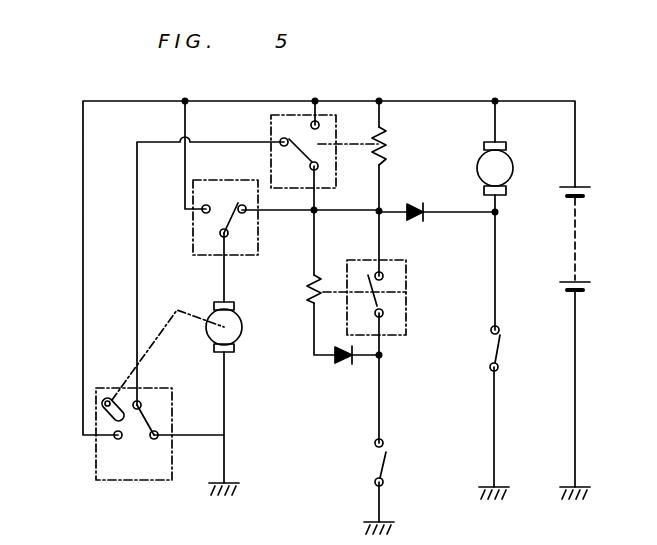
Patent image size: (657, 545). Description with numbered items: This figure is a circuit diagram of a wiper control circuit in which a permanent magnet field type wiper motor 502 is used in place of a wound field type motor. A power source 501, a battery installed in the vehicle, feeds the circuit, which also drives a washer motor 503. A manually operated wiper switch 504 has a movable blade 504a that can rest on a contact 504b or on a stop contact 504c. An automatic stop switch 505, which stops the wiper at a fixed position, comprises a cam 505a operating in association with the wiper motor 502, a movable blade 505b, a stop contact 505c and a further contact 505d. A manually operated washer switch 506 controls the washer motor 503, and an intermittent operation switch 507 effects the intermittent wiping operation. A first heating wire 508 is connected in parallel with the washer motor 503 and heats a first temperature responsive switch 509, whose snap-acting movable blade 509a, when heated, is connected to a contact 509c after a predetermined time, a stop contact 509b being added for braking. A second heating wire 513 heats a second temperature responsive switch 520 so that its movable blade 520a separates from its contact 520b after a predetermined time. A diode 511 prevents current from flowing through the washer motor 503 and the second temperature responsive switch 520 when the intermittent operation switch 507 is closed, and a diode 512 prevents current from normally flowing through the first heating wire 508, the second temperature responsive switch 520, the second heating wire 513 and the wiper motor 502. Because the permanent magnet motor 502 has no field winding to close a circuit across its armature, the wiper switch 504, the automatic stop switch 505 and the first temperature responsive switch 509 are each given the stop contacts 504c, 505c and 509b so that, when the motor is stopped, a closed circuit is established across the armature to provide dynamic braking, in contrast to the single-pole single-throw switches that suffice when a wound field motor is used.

The power source 501 is at (578, 232).
The permanent magnet field type wiper motor 502 is at (243, 326).
The washer motor 503 is at (513, 170).
The wiper switch 504 is at (225, 234).
The movable blade 504a is at (233, 228).
The contact 504b is at (204, 214).
The stop contact 504c is at (246, 214).
The automatic stop switch 505 is at (105, 436).
The cam 505a is at (104, 410).
The movable blade 505b is at (141, 404).
The stop contact 505c is at (117, 440).
The contact 505d is at (155, 440).
The washer switch 506 is at (499, 350).
The intermittent operation switch 507 is at (387, 455).
The first heating wire 508 is at (386, 148).
The first temperature responsive switch 509 is at (293, 145).
The movable blade 509a is at (262, 161).
The stop contact 509b is at (325, 118).
The contact 509c is at (280, 140).
The diode 511 is at (418, 205).
The diode 512 is at (344, 363).
The second heating wire 513 is at (321, 270).
The second temperature responsive switch 520 is at (404, 295).
The movable blade 520a is at (381, 290).
The contact 520b is at (383, 274).